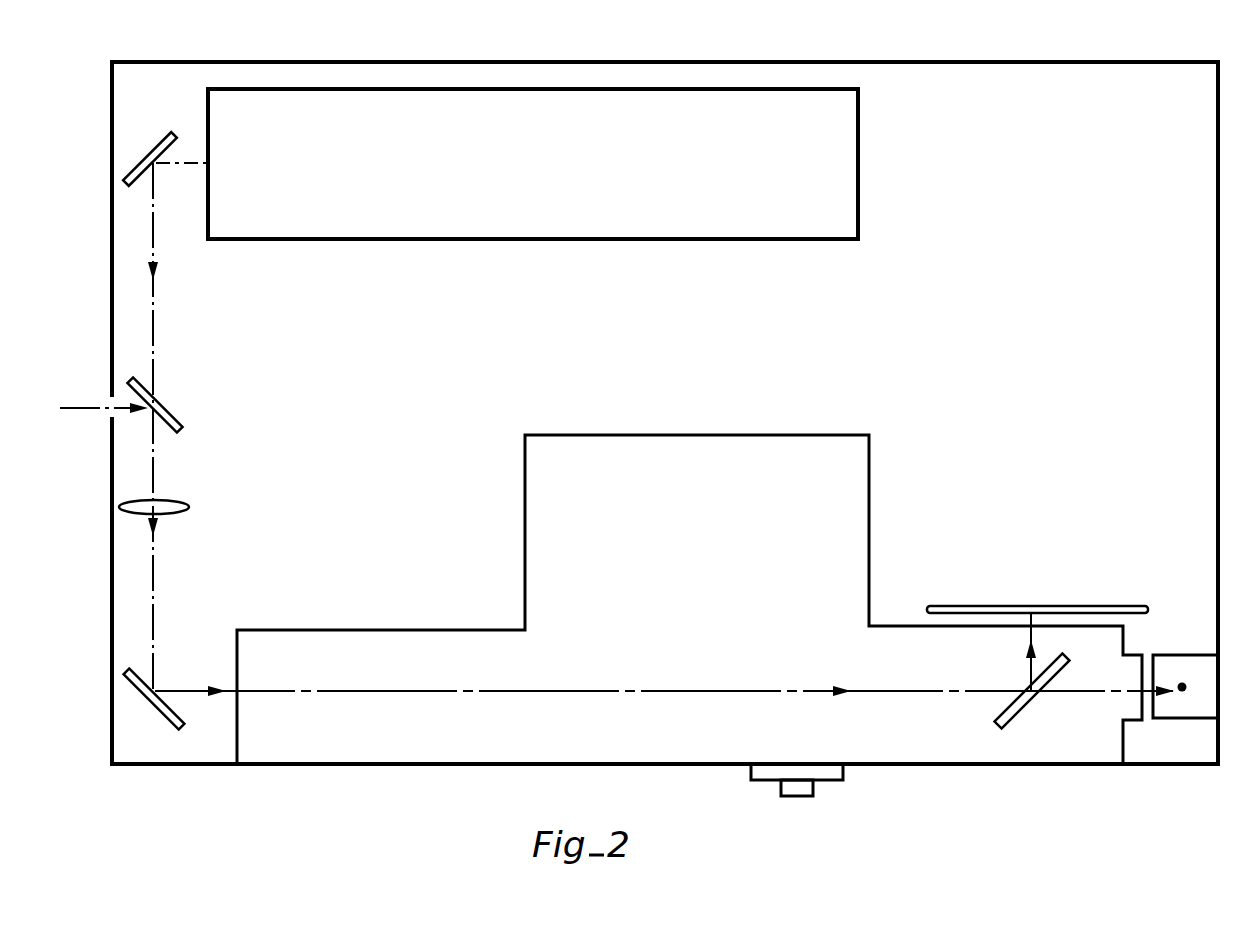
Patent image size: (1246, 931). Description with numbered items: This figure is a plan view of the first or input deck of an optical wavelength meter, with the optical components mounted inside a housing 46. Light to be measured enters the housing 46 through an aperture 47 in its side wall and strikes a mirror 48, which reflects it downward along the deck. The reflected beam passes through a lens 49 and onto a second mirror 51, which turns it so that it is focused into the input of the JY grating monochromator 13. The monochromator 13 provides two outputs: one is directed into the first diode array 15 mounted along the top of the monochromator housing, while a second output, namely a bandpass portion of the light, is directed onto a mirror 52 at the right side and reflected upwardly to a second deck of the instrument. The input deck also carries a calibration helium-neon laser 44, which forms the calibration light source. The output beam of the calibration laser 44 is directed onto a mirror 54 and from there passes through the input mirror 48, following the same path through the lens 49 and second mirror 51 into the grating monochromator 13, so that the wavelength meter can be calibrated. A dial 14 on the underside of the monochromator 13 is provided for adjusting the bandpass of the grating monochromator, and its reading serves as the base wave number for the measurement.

The housing 46 is at (930, 54).
The calibration helium-neon laser 44 is at (550, 197).
The mirror 54 is at (150, 152).
The aperture 47 is at (102, 418).
The mirror 48 is at (165, 408).
The lens 49 is at (180, 500).
The second mirror 51 is at (163, 712).
The JY grating monochromator 13 is at (718, 733).
The first diode array 15 is at (928, 609).
The mirror 52 is at (1186, 661).
The dial 14 is at (767, 786).